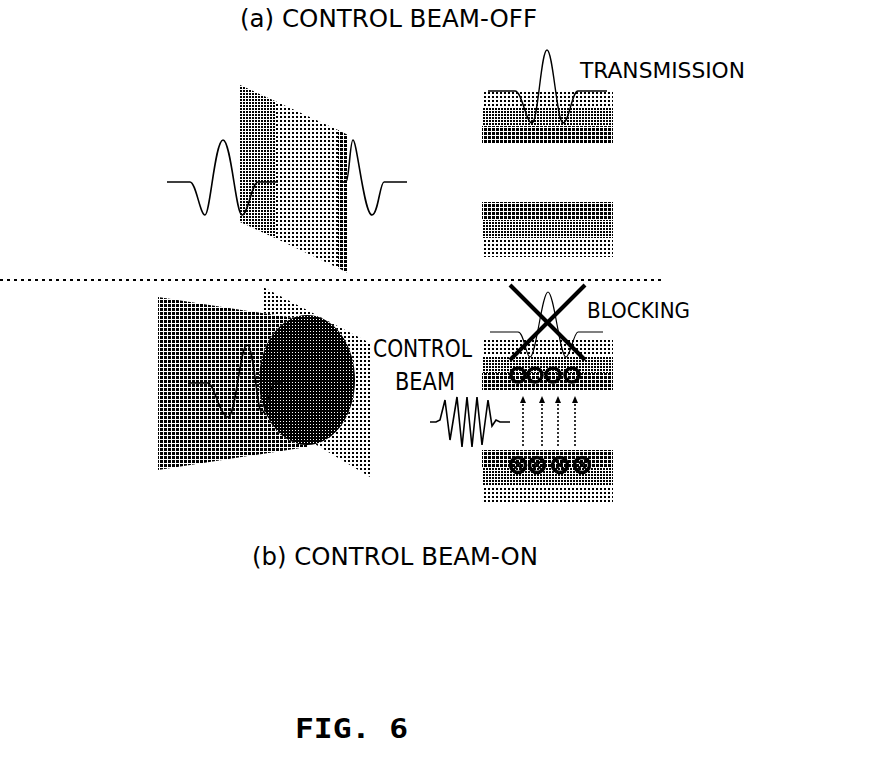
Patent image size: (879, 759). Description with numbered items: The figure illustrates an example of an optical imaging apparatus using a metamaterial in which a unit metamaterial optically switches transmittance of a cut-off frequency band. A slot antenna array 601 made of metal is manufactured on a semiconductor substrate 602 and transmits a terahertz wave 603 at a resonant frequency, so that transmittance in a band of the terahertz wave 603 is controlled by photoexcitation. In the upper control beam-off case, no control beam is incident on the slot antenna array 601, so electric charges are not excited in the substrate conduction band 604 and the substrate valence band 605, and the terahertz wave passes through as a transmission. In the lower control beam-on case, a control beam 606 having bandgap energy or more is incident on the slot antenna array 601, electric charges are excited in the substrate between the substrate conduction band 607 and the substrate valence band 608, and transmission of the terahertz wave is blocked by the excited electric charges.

The slot antenna array 601 is at (294, 126).
The semiconductor substrate 602 is at (342, 125).
The terahertz wave 603 is at (210, 142).
The substrate conduction band 604 is at (620, 134).
The substrate valence band 605 is at (620, 247).
The control beam 606 is at (153, 350).
The substrate conduction band 607 is at (620, 380).
The substrate valence band 608 is at (620, 494).